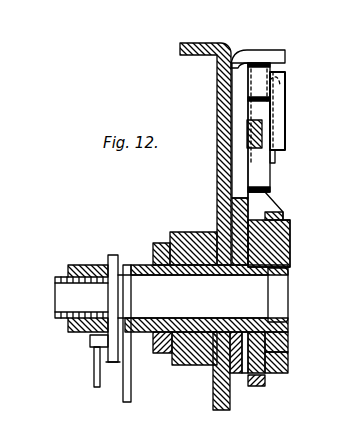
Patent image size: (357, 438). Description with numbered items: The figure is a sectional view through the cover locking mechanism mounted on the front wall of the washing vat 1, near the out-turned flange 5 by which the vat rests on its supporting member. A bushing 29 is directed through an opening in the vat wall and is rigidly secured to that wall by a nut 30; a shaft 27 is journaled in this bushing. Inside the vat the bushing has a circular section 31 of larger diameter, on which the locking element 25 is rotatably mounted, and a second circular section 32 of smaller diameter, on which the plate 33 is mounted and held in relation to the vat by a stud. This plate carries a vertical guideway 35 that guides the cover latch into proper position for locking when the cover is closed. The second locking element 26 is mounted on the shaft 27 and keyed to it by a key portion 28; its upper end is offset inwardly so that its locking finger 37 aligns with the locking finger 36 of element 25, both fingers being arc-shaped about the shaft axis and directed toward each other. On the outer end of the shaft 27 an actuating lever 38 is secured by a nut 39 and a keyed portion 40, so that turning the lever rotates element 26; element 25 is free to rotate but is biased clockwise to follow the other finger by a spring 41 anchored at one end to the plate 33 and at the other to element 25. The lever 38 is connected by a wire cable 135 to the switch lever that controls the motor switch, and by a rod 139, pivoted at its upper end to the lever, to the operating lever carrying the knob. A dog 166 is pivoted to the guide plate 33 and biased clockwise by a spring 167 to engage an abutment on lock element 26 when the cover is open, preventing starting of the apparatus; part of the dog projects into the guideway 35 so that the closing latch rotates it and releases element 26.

The washing vat 1 is at (218, 398).
The out-turned flange 5 is at (193, 55).
The locking element 25 is at (287, 351).
The locking element 26 is at (287, 363).
The shaft 27 is at (147, 279).
The key portion 28 is at (272, 297).
The bushing 29 is at (175, 356).
The nut 30 is at (201, 367).
The circular section 31 is at (266, 240).
The second circular section 32 is at (238, 375).
The plate 33 is at (238, 211).
The vertical guideway 35 is at (247, 177).
The locking finger 36 is at (248, 131).
The locking finger 37 is at (248, 158).
The actuating lever 38 is at (112, 255).
The nut 39 is at (84, 266).
The keyed portion 40 is at (97, 281).
The spring 41 is at (262, 388).
The wire cable 135 is at (94, 383).
The rod 139 is at (131, 400).
The dog 166 is at (285, 114).
The spring 167 is at (259, 63).